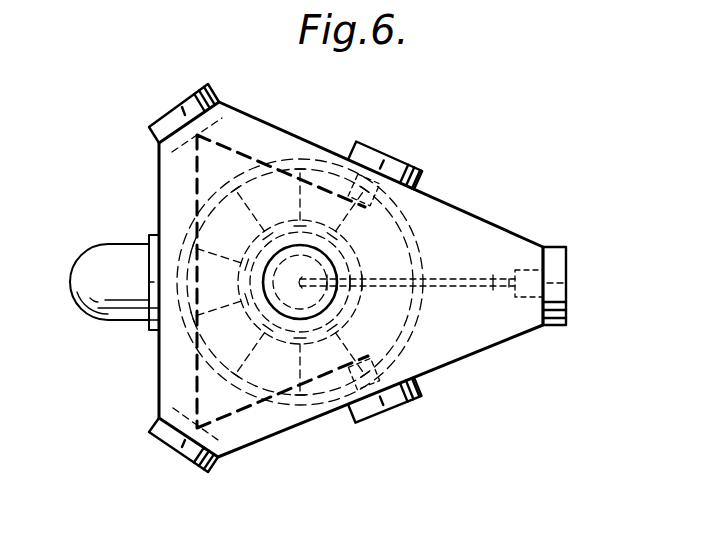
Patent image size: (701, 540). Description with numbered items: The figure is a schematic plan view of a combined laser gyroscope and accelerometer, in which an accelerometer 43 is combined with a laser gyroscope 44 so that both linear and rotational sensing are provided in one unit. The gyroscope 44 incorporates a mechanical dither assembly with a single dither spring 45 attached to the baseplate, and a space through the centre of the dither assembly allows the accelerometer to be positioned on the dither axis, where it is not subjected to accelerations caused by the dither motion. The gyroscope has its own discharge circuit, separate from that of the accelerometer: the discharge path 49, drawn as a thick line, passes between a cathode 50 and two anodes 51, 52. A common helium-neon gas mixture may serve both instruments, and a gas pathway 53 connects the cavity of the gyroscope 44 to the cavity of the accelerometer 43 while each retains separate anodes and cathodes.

The accelerometer 43 is at (284, 297).
The laser gyroscope 44 is at (305, 108).
The dither spring 45 is at (413, 230).
The discharge path 49 is at (198, 172).
The cathode 50 is at (117, 268).
The anode 51 is at (415, 133).
The anode 52 is at (397, 410).
The gas pathway 53 is at (488, 283).